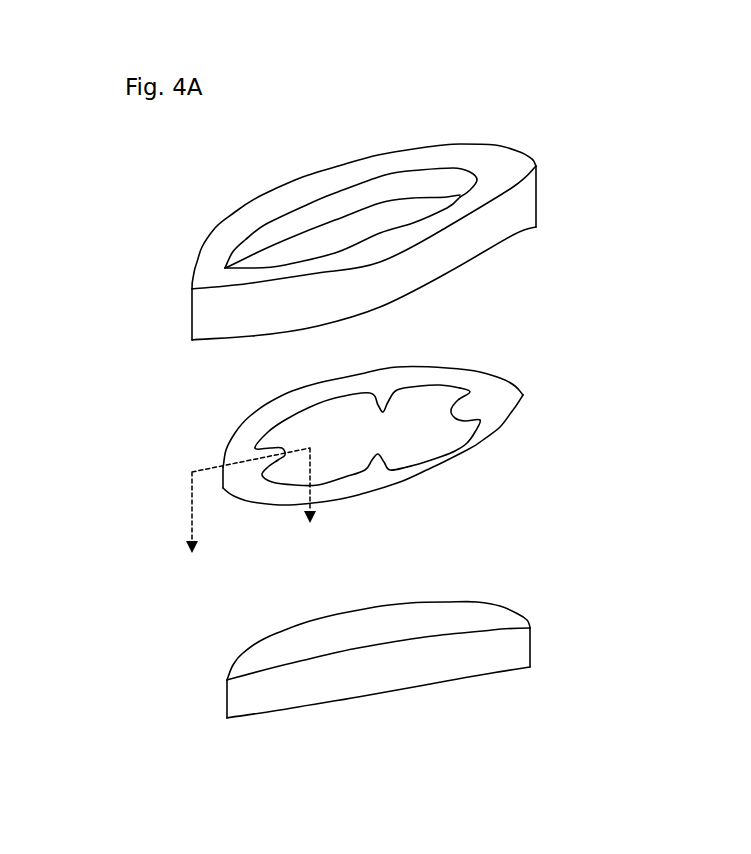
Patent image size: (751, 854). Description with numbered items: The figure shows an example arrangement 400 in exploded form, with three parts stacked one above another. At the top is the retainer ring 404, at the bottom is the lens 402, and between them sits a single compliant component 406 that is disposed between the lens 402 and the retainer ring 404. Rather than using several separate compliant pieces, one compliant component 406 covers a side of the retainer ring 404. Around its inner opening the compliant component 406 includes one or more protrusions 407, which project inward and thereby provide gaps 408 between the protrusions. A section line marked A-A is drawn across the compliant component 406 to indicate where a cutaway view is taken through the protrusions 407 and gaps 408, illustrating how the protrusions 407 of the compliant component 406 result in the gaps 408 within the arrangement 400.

The arrangement 400 is at (216, 146).
The lens 402 is at (530, 648).
The retainer ring 404 is at (536, 198).
The compliant component 406 is at (523, 395).
The protrusion 407 is at (505, 392).
The gap 408 is at (441, 445).